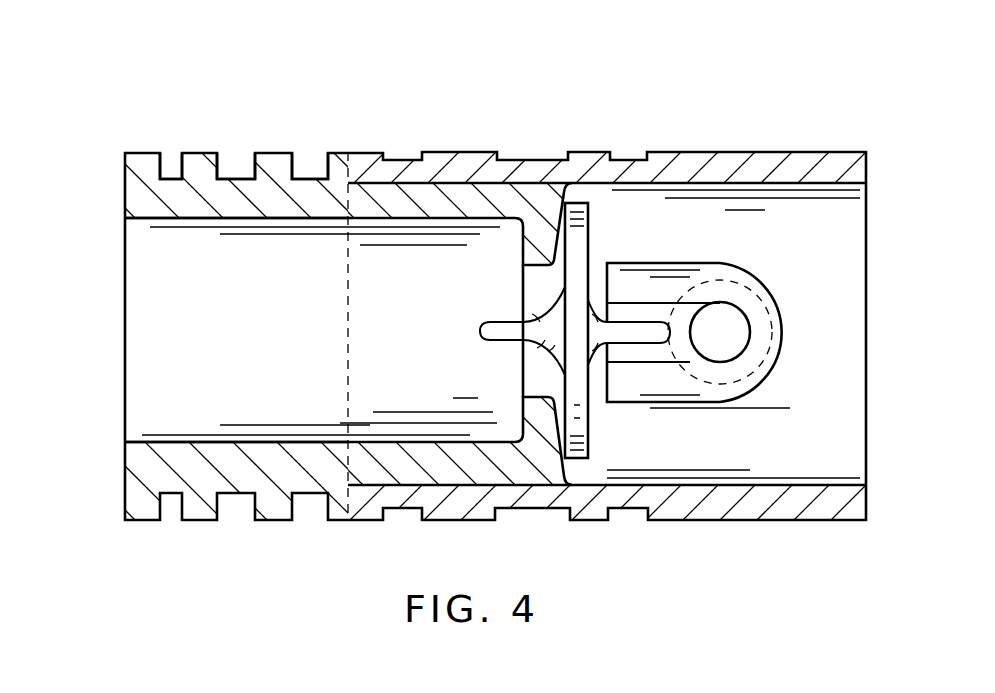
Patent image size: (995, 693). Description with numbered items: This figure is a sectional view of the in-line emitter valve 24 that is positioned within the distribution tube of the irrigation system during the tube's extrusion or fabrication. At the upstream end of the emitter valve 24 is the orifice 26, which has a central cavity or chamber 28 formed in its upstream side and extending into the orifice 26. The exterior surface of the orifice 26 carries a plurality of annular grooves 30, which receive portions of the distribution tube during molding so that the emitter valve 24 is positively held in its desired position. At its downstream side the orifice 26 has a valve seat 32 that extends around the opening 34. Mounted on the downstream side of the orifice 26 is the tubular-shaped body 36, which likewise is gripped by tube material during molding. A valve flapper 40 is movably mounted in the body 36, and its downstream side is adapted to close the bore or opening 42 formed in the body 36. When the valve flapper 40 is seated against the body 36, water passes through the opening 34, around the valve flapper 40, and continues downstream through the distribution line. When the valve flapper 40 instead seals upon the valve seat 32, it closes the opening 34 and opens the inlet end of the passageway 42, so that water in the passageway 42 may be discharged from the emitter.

The in-line emitter valve 24 is at (475, 121).
The orifice 26 is at (124, 202).
The central cavity or chamber 28 is at (204, 329).
The annular grooves 30 is at (170, 160).
The valve seat 32 is at (525, 245).
The opening 34 is at (537, 293).
The tubular-shaped body 36 is at (755, 149).
The valve flapper 40 is at (577, 257).
The bore or opening (passageway) 42 is at (718, 315).